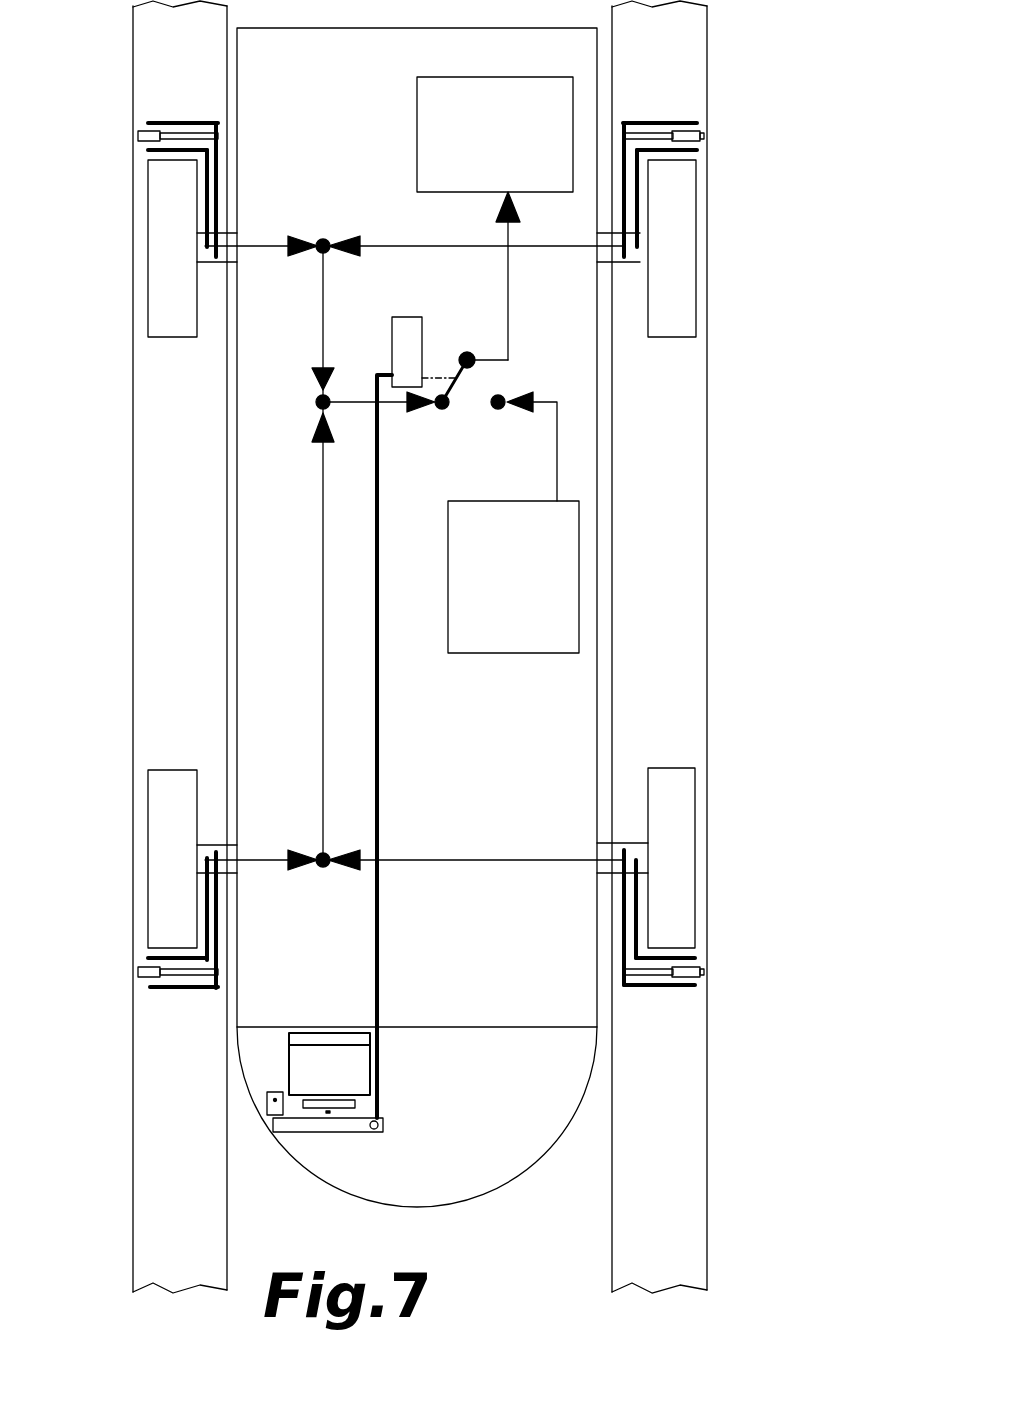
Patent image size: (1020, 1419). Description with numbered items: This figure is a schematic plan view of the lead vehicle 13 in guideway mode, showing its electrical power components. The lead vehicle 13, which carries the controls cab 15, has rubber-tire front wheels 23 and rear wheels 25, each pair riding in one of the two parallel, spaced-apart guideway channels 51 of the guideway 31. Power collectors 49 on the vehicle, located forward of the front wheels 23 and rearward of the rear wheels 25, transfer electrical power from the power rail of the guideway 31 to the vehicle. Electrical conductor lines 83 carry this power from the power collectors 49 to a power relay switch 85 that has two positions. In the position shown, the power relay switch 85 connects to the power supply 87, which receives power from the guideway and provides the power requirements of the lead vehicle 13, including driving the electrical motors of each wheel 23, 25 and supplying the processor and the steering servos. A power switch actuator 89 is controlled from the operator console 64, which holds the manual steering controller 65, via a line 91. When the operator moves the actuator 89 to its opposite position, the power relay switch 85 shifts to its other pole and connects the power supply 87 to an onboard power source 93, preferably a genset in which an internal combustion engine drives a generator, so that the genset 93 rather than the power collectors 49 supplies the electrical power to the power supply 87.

The lead vehicle 13 is at (393, 1218).
The controls cab 15 is at (587, 1092).
The front wheels 23 is at (148, 850).
The rear wheels 25 is at (696, 250).
The guideway 31 is at (725, 1230).
The power collector 49 is at (138, 972).
The guideway channel 51 is at (158, 1213).
The operator console 64 is at (270, 1077).
The manual steering controller 65 is at (335, 1125).
The electrical conductor lines 83 is at (323, 658).
The power relay switch 85 is at (468, 383).
The power supply 87 is at (417, 131).
The power switch actuator 89 is at (392, 338).
The line 91 is at (377, 756).
The onboard power source 93 is at (548, 653).